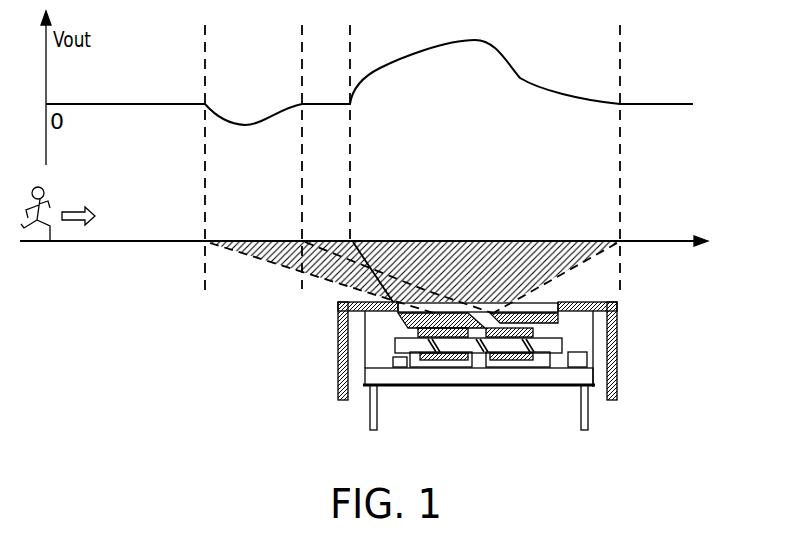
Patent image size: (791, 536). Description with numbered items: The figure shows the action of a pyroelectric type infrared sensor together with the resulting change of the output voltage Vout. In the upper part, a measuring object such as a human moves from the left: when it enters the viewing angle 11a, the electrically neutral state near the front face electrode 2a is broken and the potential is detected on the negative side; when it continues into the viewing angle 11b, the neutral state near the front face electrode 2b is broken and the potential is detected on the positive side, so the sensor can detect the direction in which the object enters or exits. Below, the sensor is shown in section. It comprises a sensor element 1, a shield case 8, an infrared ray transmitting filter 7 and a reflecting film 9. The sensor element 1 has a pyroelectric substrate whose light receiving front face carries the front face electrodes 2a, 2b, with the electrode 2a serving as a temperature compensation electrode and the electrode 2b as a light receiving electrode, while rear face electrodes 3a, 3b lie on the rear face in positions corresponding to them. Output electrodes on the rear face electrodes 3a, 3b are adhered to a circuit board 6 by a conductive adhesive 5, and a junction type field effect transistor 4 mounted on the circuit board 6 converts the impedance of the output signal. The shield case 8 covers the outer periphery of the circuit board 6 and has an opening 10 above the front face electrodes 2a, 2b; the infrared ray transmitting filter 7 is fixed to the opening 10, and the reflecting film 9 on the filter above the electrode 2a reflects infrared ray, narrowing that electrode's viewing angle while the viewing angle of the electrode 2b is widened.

The sensor element 1 is at (395, 340).
The front face electrode 2a is at (490, 355).
The front face electrode 2b is at (460, 355).
The rear face electrode 3a is at (518, 360).
The rear face electrode 3b is at (436, 360).
The junction type field effect transistor 4 is at (583, 358).
The conductive adhesive 5 is at (395, 358).
The circuit board 6 is at (587, 373).
The infrared ray transmitting filter 7 is at (342, 303).
The shield case 8 is at (618, 393).
The reflecting film 9 is at (613, 301).
The opening 10 is at (557, 302).
The viewing angle 11a is at (288, 250).
The viewing angle 11b is at (430, 262).